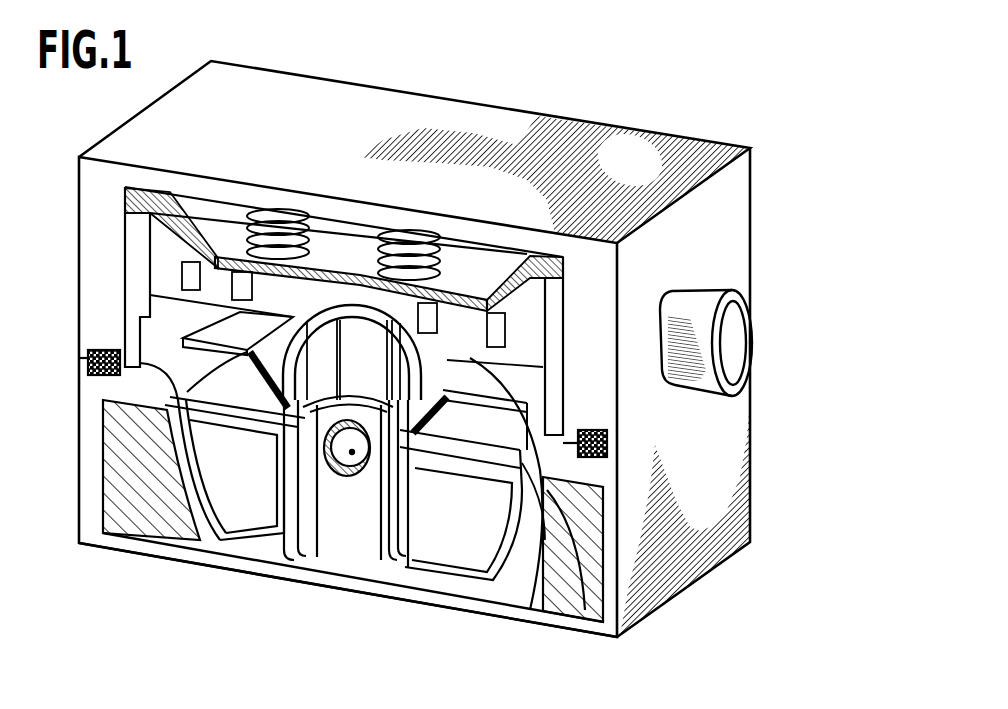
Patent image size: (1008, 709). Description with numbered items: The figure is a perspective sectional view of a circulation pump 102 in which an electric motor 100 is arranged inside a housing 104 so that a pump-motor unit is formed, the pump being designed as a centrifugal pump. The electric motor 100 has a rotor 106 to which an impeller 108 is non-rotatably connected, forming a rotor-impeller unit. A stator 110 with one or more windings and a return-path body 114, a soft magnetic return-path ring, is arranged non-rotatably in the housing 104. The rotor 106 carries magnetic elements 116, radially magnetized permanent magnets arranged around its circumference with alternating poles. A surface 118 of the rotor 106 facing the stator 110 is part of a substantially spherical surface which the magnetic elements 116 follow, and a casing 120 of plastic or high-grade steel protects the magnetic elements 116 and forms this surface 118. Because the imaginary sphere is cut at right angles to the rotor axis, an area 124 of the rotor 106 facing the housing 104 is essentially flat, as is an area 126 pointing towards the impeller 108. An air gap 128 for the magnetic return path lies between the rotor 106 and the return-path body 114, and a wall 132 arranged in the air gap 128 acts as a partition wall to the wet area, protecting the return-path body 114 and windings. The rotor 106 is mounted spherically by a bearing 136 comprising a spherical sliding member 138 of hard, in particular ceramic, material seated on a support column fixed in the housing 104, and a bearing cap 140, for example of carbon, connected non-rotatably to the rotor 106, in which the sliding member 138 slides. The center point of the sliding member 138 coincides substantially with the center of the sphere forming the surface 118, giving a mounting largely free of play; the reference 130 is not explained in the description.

The electric motor 100 is at (473, 555).
The circulation pump 102 is at (622, 100).
The housing 104 is at (703, 140).
The rotor 106 is at (260, 522).
The impeller 108 is at (227, 328).
The stator 110 is at (170, 556).
The return-path body 114 is at (127, 495).
The magnetic elements 116 is at (435, 540).
The surface 118 is at (190, 487).
The casing 120 is at (652, 604).
The area 124 is at (286, 560).
The area 126 is at (497, 417).
The air gap 128 is at (175, 445).
The support block 130 is at (620, 637).
The wall 132 is at (540, 530).
The bearing 136 is at (362, 388).
The sliding member 138 is at (352, 455).
The bearing cap 140 is at (440, 437).